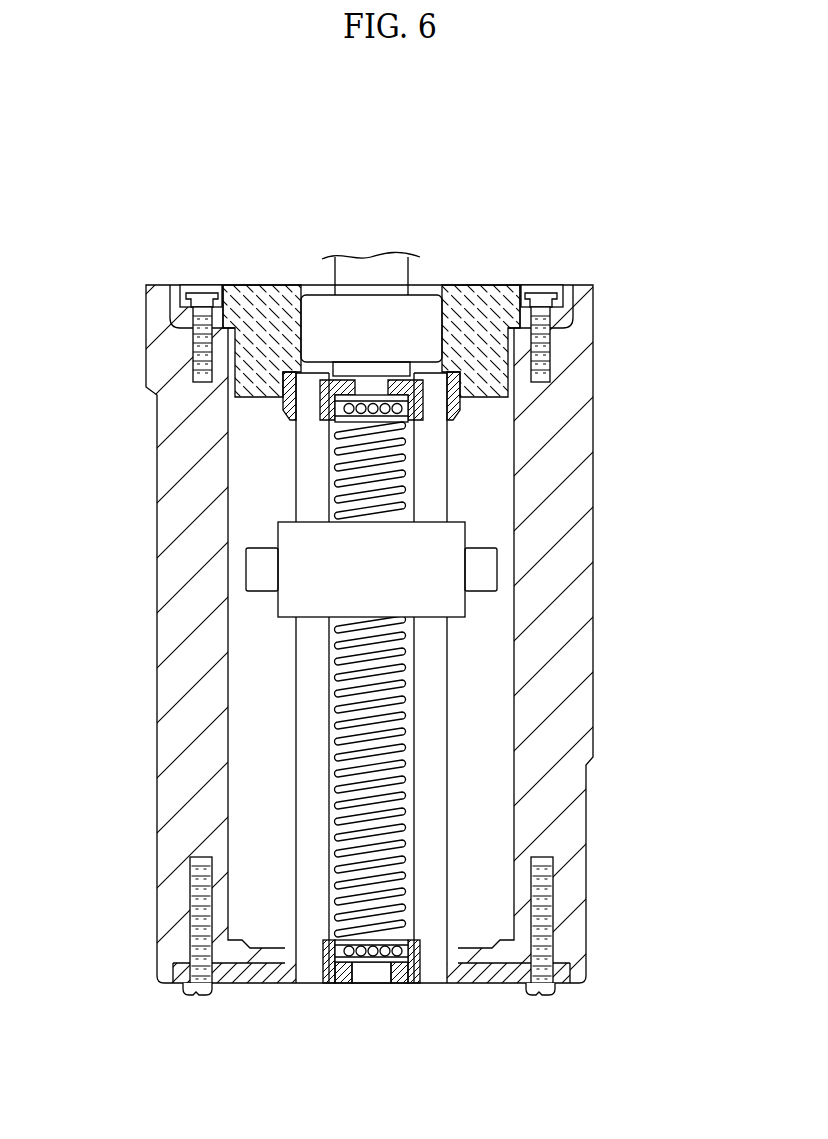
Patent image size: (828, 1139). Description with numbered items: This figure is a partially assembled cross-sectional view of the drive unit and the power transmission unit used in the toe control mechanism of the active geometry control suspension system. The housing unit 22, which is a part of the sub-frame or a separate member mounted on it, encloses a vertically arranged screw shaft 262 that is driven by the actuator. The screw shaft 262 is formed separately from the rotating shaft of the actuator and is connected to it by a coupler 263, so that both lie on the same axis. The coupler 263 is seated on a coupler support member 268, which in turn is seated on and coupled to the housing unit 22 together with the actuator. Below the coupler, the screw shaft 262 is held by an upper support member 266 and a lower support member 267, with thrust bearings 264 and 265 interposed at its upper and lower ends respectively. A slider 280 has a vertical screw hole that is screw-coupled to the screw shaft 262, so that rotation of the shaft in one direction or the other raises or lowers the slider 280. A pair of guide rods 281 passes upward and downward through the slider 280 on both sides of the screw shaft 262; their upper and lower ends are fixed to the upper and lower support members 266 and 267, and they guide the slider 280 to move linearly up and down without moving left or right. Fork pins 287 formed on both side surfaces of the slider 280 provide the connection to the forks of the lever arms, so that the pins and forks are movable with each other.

The housing unit 22 is at (562, 640).
The screw shaft 262 is at (405, 706).
The coupler 263 is at (421, 322).
The thrust bearing 264 is at (388, 410).
The thrust bearing 265 is at (348, 952).
The upper support member 266 is at (478, 386).
The lower support member 267 is at (250, 984).
The coupler support member 268 is at (482, 322).
The slider 280 is at (300, 588).
The guide rod 281 is at (305, 778).
The fork pin 287 is at (258, 566).